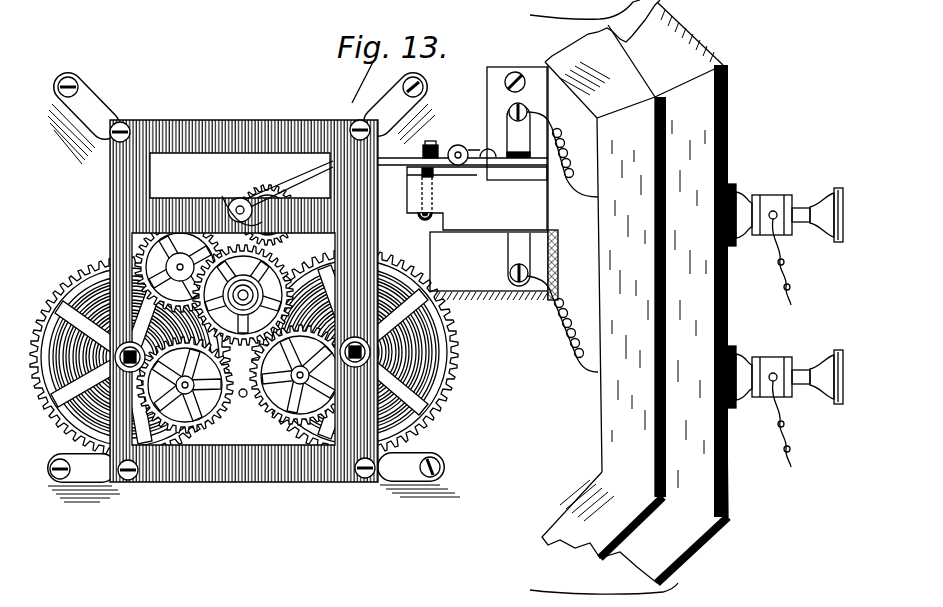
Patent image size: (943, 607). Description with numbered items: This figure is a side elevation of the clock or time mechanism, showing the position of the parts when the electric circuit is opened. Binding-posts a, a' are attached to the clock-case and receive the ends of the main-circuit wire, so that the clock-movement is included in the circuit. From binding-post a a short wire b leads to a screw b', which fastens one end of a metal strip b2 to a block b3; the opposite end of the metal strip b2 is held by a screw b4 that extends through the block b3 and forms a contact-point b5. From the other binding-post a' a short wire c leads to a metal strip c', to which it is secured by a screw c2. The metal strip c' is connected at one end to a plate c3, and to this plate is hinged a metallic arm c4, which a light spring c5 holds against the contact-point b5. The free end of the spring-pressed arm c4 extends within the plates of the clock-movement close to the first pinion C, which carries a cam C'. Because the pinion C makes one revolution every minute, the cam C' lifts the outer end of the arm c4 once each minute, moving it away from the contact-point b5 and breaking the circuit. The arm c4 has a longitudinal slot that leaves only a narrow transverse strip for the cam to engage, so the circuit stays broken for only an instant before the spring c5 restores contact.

The binding-post a is at (785, 373).
The binding-post a' is at (785, 210).
The short wire b is at (563, 324).
The screw b' is at (507, 259).
The metal strip b2 is at (472, 235).
The block b3 is at (477, 198).
The screw b4 is at (427, 232).
The contact-point b5 is at (436, 178).
The short wire c is at (562, 154).
The metal strip c' is at (509, 123).
The screw c2 is at (511, 113).
The plate c3 is at (472, 142).
The metallic arm c4 is at (413, 163).
The light spring c5 is at (429, 144).
The first pinion C is at (260, 211).
The cam C' is at (297, 187).